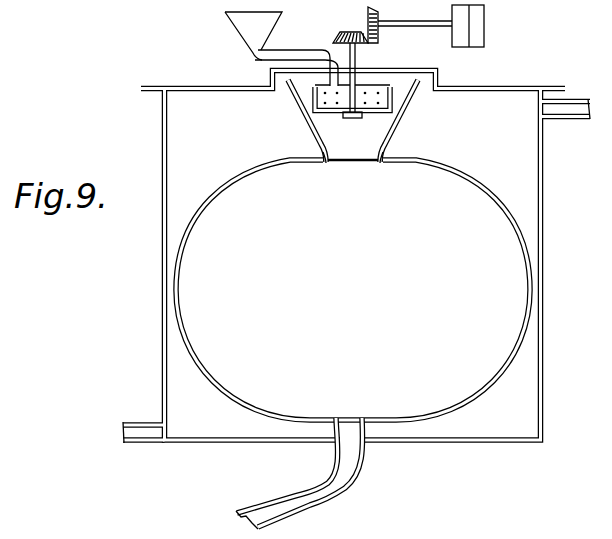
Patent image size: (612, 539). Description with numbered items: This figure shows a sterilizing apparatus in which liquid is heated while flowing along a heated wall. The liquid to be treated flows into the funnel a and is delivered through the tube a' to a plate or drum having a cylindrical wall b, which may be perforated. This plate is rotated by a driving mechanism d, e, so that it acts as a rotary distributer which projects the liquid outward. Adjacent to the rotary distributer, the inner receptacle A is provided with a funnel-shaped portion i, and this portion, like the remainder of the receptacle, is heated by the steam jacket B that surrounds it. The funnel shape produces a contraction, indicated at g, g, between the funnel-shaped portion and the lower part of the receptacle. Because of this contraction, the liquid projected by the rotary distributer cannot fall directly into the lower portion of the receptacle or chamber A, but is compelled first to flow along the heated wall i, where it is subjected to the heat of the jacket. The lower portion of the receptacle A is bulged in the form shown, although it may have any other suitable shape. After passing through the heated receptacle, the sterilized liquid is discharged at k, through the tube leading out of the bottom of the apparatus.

The funnel a is at (240, 36).
The tube a' is at (296, 51).
The cylindrical wall b is at (318, 92).
The driving mechanism d is at (349, 33).
The driving mechanism e is at (485, 20).
The funnel-shaped portion i is at (311, 116).
The contraction g is at (323, 162).
The discharge k is at (255, 506).
The inner receptacle A is at (353, 290).
The steam jacket B is at (356, 257).